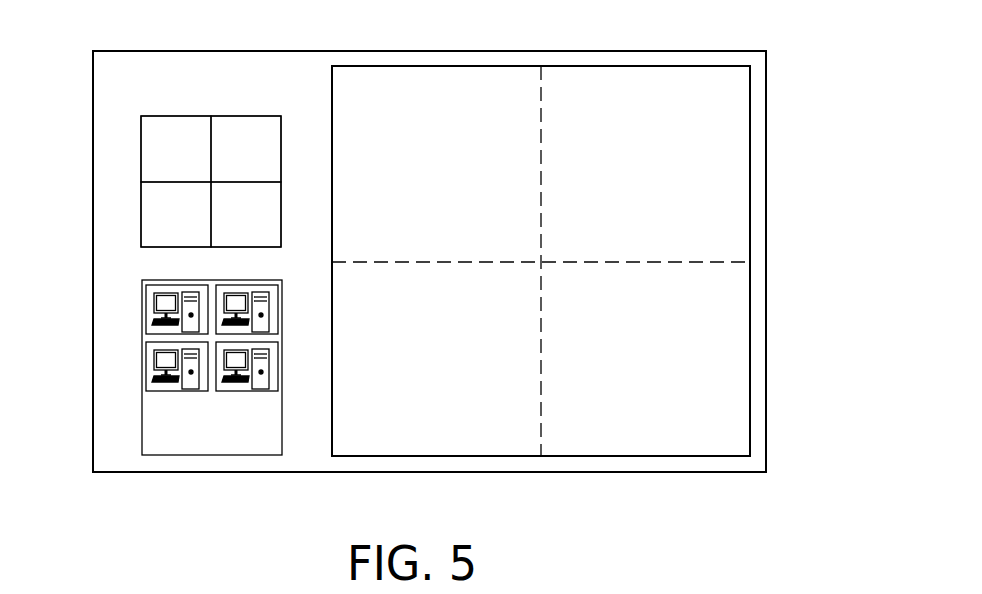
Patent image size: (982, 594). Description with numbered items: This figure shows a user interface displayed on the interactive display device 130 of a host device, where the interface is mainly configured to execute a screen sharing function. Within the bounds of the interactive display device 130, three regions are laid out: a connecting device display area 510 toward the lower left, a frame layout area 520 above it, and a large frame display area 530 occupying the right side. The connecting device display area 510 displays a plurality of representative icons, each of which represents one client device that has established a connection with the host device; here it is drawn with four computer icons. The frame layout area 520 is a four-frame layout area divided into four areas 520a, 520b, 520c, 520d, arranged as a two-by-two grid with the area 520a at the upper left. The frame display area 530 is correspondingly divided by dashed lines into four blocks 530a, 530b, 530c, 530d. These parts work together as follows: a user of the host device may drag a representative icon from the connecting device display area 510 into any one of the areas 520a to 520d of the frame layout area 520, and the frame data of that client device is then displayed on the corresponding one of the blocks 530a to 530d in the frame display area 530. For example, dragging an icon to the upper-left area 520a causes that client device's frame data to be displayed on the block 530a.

The interactive display device 130 is at (766, 442).
The connecting device display area 510 is at (142, 405).
The frame layout area 520 is at (141, 190).
The area 520a is at (176, 149).
The area 520b is at (246, 149).
The area 520c is at (176, 214).
The area 520d is at (246, 214).
The frame display area 530 is at (633, 66).
The block 530a is at (436, 164).
The block 530b is at (645, 164).
The block 530c is at (436, 359).
The block 530d is at (645, 359).